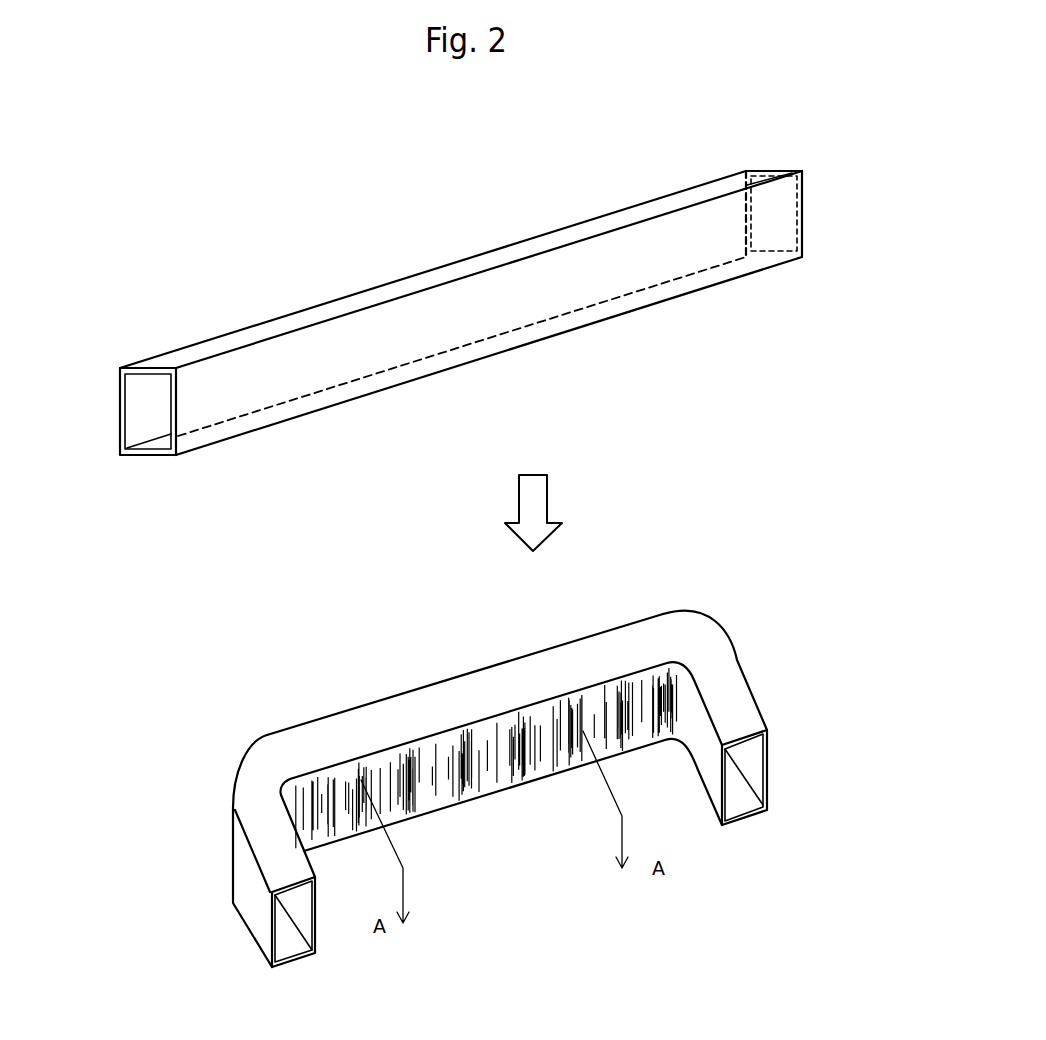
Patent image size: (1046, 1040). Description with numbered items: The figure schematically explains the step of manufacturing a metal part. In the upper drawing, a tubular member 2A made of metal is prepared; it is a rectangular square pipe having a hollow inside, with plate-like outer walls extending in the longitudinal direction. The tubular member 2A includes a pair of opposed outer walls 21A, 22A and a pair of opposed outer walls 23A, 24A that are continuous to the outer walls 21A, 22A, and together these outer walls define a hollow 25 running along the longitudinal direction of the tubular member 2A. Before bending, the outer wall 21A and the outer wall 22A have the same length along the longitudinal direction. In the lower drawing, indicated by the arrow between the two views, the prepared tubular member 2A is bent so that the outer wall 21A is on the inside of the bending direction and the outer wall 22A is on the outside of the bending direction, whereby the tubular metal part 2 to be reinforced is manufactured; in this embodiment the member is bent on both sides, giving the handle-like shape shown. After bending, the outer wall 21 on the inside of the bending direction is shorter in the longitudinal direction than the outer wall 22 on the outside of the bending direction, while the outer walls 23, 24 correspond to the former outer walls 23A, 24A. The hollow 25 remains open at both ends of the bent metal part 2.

The metal part 2 is at (462, 763).
The tubular member 2A is at (461, 316).
The outer wall 21 is at (547, 764).
The outer wall 21A is at (321, 392).
The outer wall 22 is at (245, 893).
The outer wall 22A is at (372, 331).
The outer wall 23 is at (530, 673).
The outer wall 23A is at (262, 331).
The outer wall 24 is at (475, 793).
The outer wall 24A is at (437, 362).
The hollow 25 is at (132, 388).